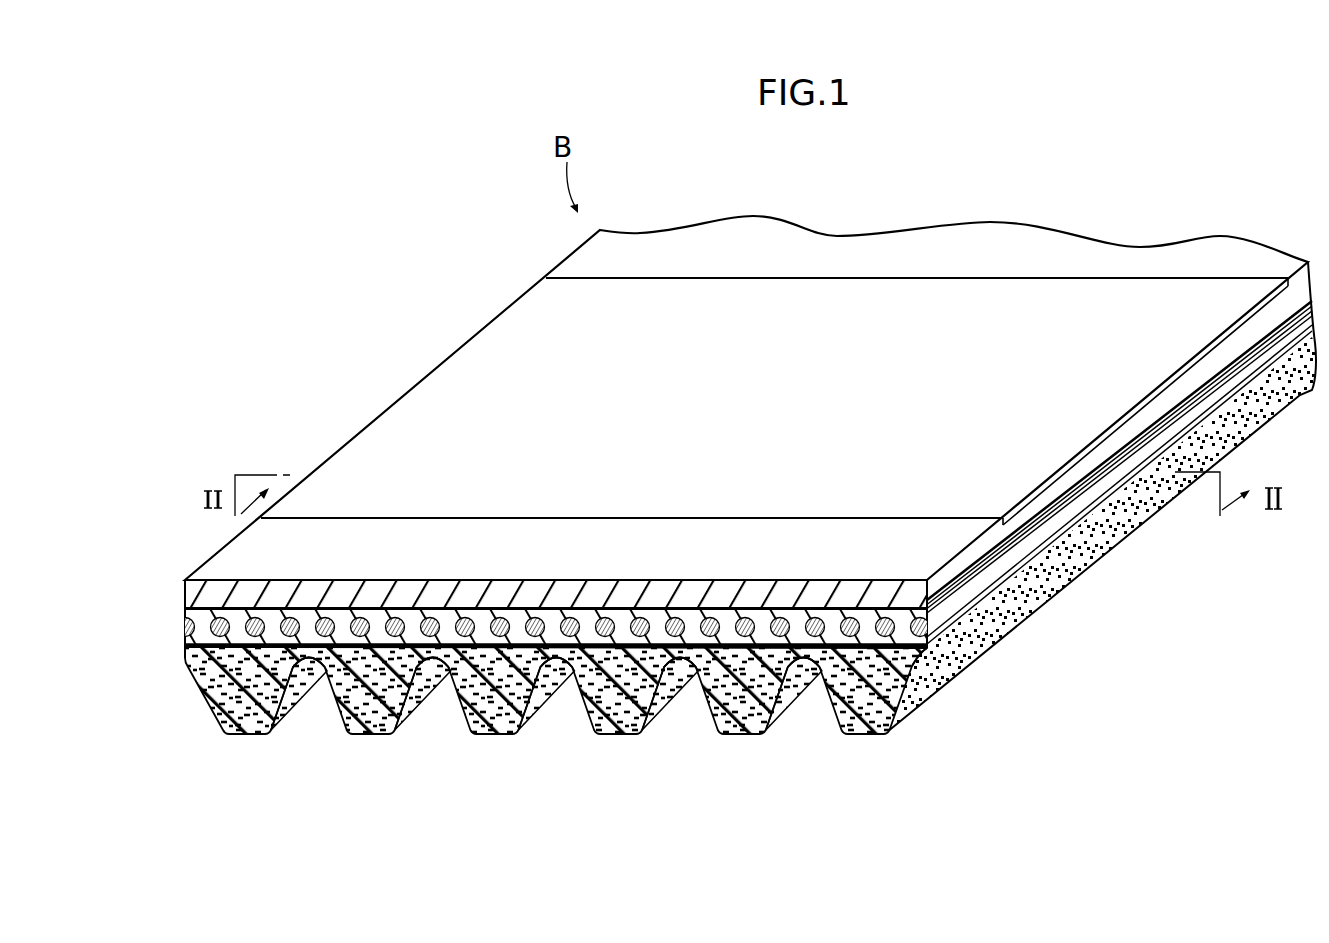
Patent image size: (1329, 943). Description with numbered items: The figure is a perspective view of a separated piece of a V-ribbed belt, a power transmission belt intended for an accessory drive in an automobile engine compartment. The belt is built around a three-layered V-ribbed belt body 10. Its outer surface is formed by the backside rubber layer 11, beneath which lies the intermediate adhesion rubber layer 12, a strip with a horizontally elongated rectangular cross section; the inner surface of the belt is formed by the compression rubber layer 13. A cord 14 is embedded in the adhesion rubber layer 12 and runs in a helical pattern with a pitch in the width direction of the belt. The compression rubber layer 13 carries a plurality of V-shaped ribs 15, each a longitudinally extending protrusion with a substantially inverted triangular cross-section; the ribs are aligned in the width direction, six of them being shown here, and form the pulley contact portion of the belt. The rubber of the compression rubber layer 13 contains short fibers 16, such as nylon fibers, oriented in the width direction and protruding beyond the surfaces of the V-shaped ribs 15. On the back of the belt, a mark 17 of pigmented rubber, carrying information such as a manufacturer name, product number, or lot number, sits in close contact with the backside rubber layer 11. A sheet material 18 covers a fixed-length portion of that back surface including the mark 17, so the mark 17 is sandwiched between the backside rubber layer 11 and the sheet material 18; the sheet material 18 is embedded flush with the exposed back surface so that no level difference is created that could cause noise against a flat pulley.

The V-ribbed belt body 10 is at (407, 389).
The backside rubber layer 11 is at (640, 600).
The adhesion rubber layer 12 is at (190, 597).
The compression rubber layer 13 is at (902, 686).
The cord 14 is at (190, 628).
The V-shaped ribs 15 is at (253, 718).
The short fibers 16 is at (237, 713).
The mark 17 is at (723, 403).
The sheet material 18 is at (481, 350).